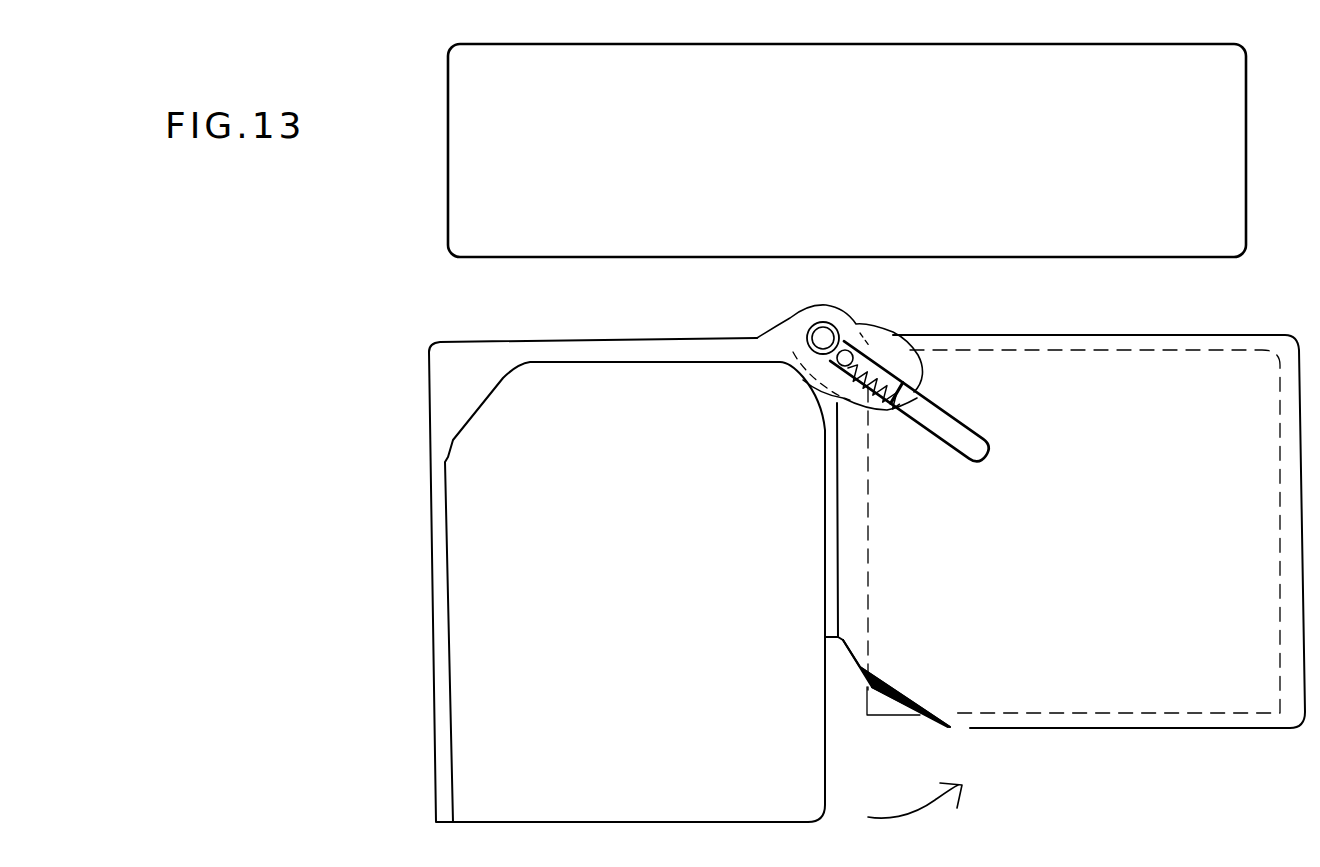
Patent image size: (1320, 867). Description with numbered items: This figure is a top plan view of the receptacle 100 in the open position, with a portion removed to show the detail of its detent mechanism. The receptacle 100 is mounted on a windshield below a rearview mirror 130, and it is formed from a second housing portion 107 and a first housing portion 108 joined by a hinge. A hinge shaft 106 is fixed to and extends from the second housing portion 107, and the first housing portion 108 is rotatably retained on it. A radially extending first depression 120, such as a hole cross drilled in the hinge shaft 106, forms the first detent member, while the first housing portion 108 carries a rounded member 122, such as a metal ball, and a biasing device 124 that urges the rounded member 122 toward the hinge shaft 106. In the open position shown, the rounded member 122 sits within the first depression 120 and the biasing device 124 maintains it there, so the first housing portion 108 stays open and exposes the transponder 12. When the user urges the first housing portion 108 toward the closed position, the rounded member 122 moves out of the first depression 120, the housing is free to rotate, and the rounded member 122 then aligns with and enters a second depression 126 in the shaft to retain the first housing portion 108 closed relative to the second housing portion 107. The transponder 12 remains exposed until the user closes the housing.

The receptacle 100 is at (385, 408).
The second housing portion 107 is at (433, 503).
The first housing portion 108 is at (1218, 732).
The rearview mirror 130 is at (448, 187).
The hinge shaft 106 is at (800, 313).
The first depression 120 is at (823, 307).
The rounded member 122 is at (849, 350).
The biasing device 124 is at (917, 390).
The second depression 126 is at (803, 350).
The transponder 12 is at (883, 705).